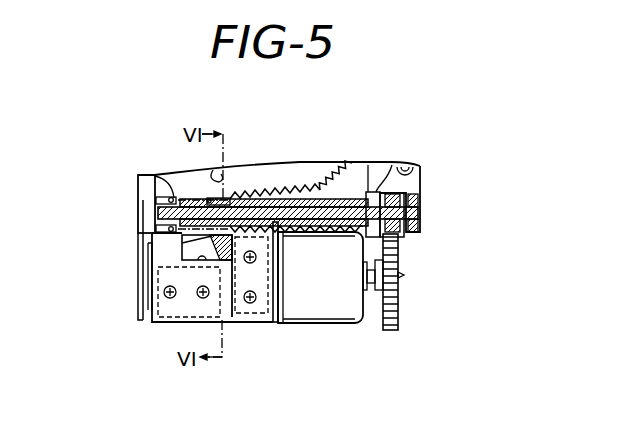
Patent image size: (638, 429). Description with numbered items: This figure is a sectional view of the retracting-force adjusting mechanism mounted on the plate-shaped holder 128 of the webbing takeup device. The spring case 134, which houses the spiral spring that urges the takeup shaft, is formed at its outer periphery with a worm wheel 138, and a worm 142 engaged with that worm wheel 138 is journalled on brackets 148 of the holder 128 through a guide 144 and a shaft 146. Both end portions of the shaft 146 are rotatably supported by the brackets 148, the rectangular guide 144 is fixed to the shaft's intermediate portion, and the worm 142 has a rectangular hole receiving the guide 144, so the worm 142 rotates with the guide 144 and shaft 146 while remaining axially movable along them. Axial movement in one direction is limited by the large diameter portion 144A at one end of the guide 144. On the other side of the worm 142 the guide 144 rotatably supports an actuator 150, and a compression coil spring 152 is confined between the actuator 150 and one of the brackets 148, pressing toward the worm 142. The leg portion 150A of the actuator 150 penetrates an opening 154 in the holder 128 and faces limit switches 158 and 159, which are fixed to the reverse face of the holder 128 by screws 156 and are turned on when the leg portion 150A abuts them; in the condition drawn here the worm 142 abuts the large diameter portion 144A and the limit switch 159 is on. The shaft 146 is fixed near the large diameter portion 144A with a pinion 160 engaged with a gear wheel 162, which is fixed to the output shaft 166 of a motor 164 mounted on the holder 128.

The plate-shaped holder 128 is at (147, 185).
The spring case 134 is at (315, 161).
The worm wheel 138 is at (213, 176).
The worm 142 is at (289, 198).
The guide 144 is at (387, 158).
The large diameter portion 144A is at (405, 166).
The shaft 146 is at (342, 190).
The brackets 148 is at (158, 213).
The actuator 150 is at (228, 197).
The leg portion 150A is at (182, 243).
The compression coil spring 152 is at (160, 180).
The opening 154 is at (167, 230).
The screws 156 is at (166, 292).
The limit switch 158 is at (164, 324).
The limit switch 159 is at (256, 318).
The pinion 160 is at (402, 186).
The gear wheel 162 is at (398, 308).
The motor 164 is at (321, 308).
The output shaft 166 is at (404, 275).